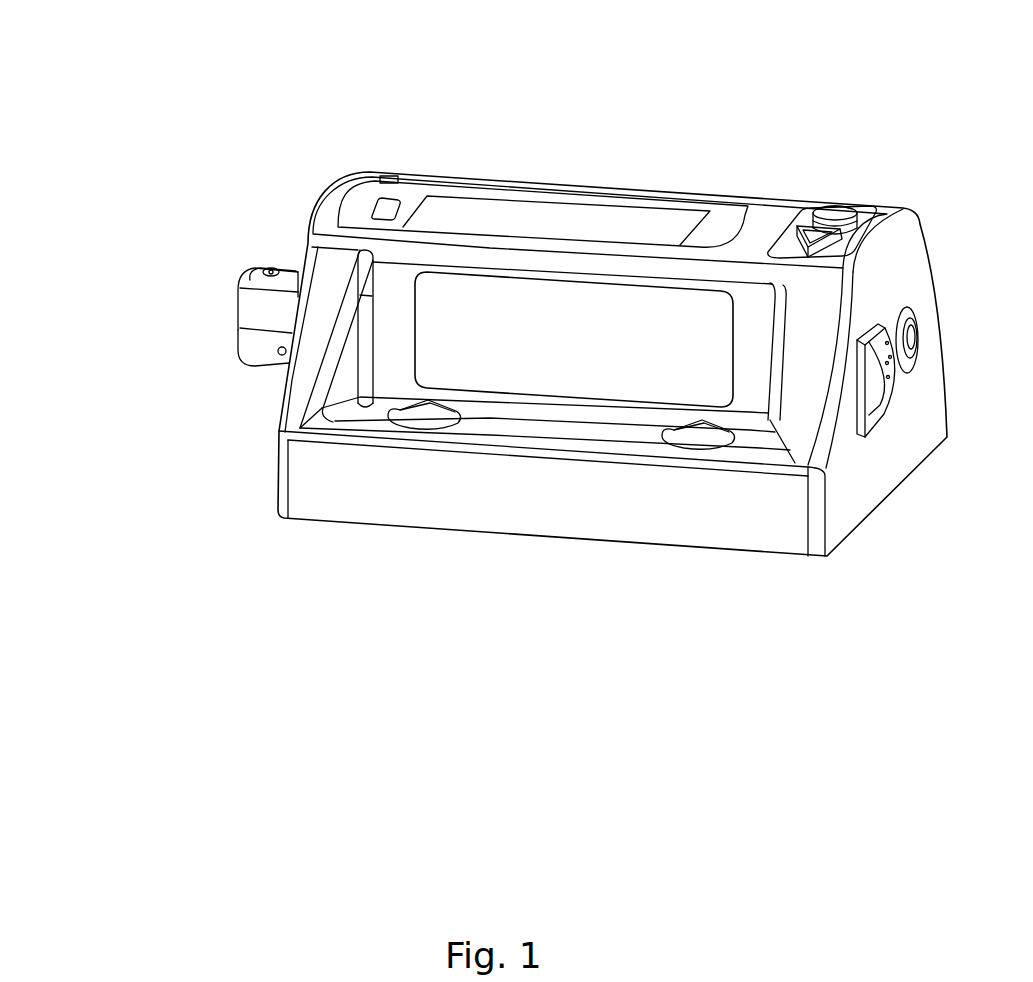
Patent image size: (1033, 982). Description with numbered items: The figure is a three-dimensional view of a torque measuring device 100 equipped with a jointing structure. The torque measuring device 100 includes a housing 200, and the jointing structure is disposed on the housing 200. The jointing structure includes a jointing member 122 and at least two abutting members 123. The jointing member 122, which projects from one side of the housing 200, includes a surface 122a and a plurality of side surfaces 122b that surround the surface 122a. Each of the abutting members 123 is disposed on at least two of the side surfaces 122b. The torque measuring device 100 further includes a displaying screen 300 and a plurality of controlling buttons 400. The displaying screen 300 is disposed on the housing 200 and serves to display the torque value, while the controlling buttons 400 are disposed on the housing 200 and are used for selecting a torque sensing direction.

The torque measuring device 100 is at (197, 43).
The jointing member 122 is at (163, 313).
The surface 122a is at (237, 303).
The side surfaces 122b is at (237, 354).
The abutting members 123 is at (273, 268).
The housing 200 is at (630, 520).
The displaying screen 300 is at (542, 213).
The controlling buttons 400 is at (802, 228).